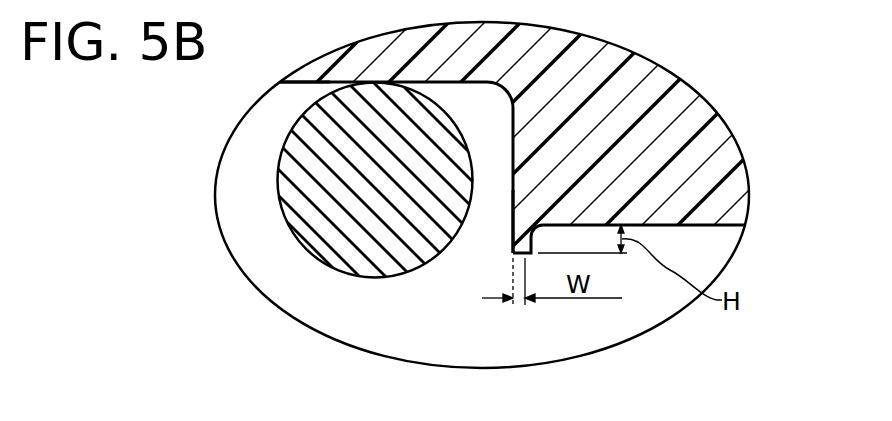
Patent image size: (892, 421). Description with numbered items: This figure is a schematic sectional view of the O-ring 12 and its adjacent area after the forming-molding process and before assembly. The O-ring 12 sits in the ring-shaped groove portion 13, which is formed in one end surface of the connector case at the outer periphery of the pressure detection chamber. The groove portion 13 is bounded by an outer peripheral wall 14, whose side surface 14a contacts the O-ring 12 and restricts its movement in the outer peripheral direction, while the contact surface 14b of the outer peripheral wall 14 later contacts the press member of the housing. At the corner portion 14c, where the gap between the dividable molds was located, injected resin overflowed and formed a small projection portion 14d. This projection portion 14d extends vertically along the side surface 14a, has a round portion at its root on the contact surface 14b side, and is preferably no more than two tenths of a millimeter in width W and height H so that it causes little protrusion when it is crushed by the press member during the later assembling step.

The O-ring 12 is at (303, 159).
The groove portion 13 is at (312, 83).
The outer peripheral wall 14 is at (623, 120).
The side surface 14a is at (513, 153).
The contact surface 14b is at (658, 226).
The corner portion 14c is at (520, 208).
The projection portion 14d is at (512, 241).